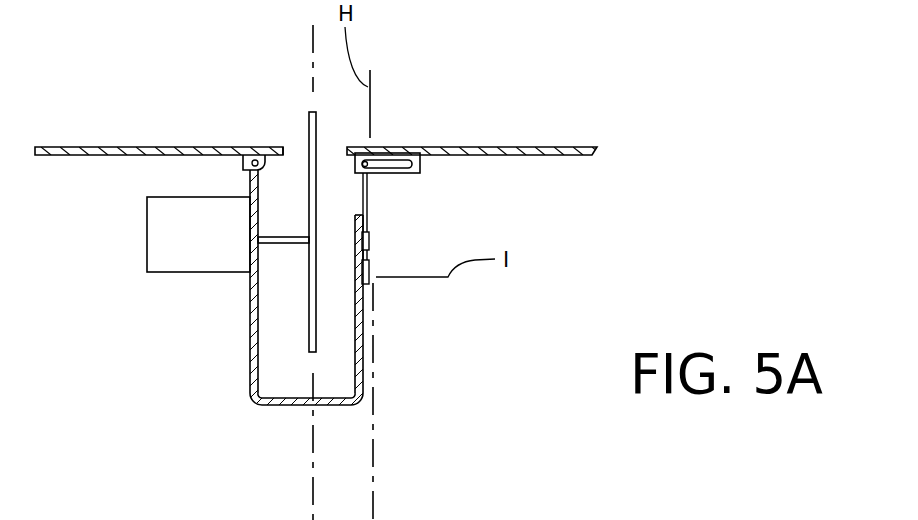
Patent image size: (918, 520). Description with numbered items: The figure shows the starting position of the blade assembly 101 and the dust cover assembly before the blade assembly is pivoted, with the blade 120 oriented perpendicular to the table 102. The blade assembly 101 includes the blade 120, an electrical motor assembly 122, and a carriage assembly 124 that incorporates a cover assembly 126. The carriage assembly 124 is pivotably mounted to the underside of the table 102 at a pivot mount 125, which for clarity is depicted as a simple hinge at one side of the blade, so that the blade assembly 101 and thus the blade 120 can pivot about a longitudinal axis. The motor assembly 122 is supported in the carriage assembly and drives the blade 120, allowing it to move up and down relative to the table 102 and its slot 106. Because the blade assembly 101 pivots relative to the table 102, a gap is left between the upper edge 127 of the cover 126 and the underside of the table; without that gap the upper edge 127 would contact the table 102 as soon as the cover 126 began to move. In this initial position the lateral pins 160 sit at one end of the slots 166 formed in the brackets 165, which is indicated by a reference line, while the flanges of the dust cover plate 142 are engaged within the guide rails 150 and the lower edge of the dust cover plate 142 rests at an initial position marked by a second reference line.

The blade assembly 101 is at (250, 399).
The table 102 is at (523, 150).
The slot 106 is at (287, 143).
The blade 120 is at (310, 130).
The electrical motor assembly 122 is at (192, 252).
The carriage assembly 124 is at (251, 350).
The pivot mount 125 is at (252, 158).
The cover assembly 126 is at (363, 363).
The upper edge of the cover 127 is at (357, 215).
The dust cover plate 142 is at (370, 200).
The guide rails 150 is at (370, 243).
The lateral pins 160 is at (392, 165).
The brackets 165 is at (428, 150).
The slots 166 is at (408, 165).